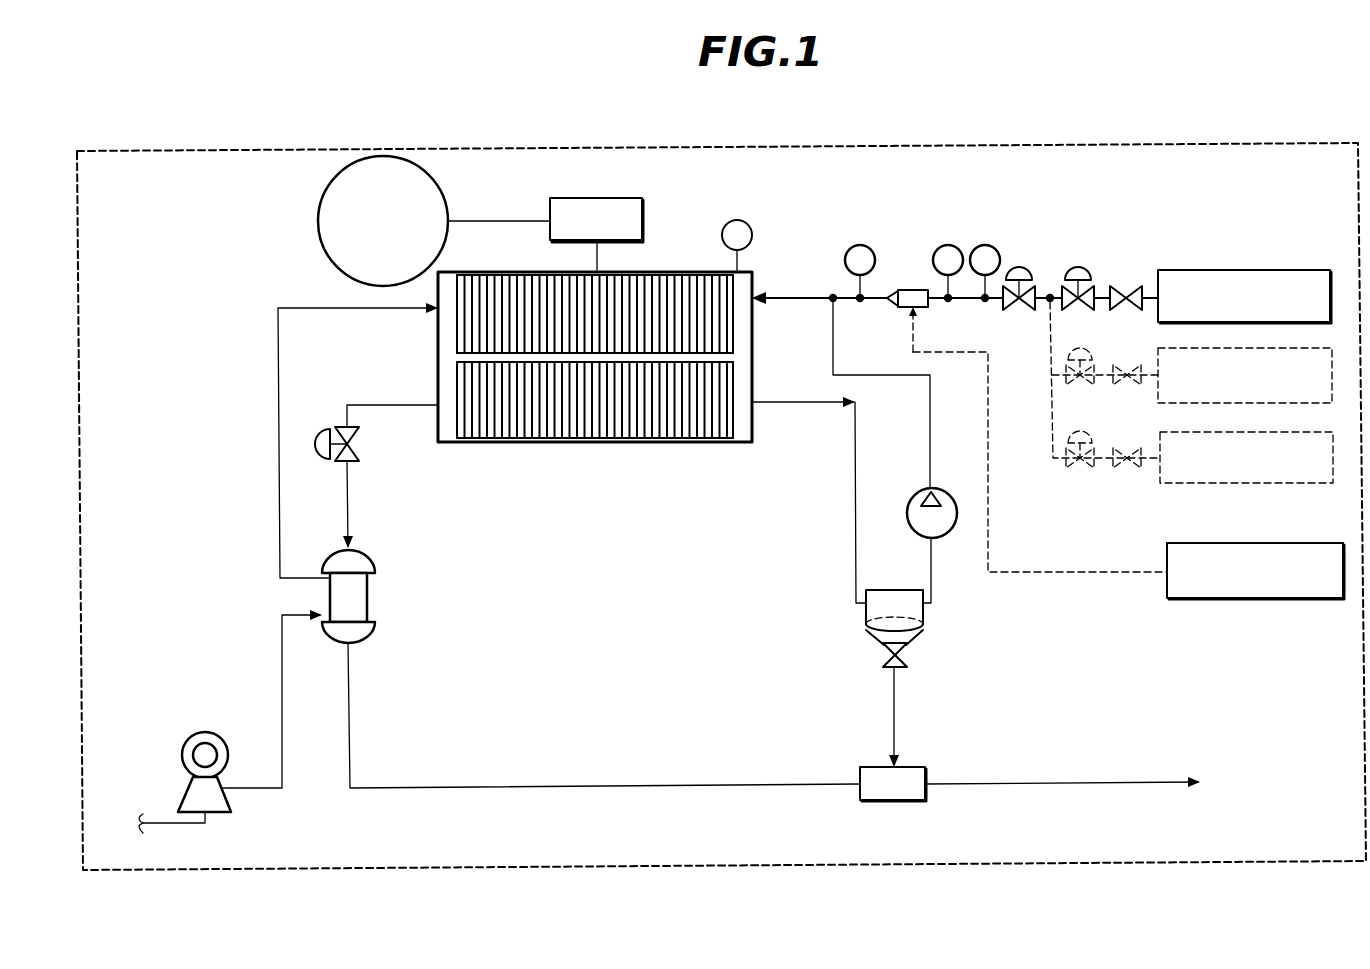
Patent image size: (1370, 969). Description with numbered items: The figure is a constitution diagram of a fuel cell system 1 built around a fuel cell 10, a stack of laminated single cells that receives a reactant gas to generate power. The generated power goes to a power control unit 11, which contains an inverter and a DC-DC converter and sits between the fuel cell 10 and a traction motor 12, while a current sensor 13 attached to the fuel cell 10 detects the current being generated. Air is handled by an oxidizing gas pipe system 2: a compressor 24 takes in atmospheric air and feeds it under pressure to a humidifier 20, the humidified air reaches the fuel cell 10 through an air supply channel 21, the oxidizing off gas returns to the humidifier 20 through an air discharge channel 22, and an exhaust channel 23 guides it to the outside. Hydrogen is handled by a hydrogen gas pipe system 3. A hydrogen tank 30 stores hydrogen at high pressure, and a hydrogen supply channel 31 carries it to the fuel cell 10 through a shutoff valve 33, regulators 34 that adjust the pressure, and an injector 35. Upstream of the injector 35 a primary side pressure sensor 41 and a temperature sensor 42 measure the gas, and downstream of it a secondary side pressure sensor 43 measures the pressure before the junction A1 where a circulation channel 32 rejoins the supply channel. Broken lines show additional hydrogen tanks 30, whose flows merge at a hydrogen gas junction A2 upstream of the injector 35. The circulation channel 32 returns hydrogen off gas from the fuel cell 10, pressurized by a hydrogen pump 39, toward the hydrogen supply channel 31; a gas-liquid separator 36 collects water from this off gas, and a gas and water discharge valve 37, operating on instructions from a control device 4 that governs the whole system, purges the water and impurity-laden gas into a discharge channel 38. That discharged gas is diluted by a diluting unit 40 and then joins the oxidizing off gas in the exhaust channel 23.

The fuel cell system 1 is at (588, 146).
The oxidizing gas pipe system 2 is at (669, 568).
The hydrogen gas pipe system 3 is at (1042, 481).
The control device 4 is at (1256, 542).
The fuel cell 10 is at (700, 444).
The power control unit (PCU) 11 is at (643, 221).
The traction motor 12 is at (320, 233).
The current sensor 13 is at (745, 222).
The humidifier 20 is at (368, 604).
The air supply channel 21 is at (280, 525).
The air discharge channel 22 is at (349, 500).
The exhaust channel 23 is at (792, 785).
The compressor 24 is at (212, 732).
The hydrogen tank 30 is at (1272, 270).
The hydrogen supply channel 31 is at (787, 298).
The circulation channel 32 is at (855, 545).
The shutoff valve 33 is at (1122, 290).
The regulator 34 is at (1022, 265).
The injector 35 is at (912, 288).
The gas-liquid separator 36 is at (886, 590).
The gas and water discharge valve 37 is at (880, 657).
The discharge channel 38 is at (895, 720).
The hydrogen pump 39 is at (920, 492).
The diluting unit 40 is at (927, 766).
The primary side pressure sensor 41 is at (950, 244).
The temperature sensor 42 is at (988, 244).
The secondary side pressure sensor 43 is at (858, 244).
The junction A1 is at (832, 301).
The hydrogen gas junction A2 is at (1048, 303).